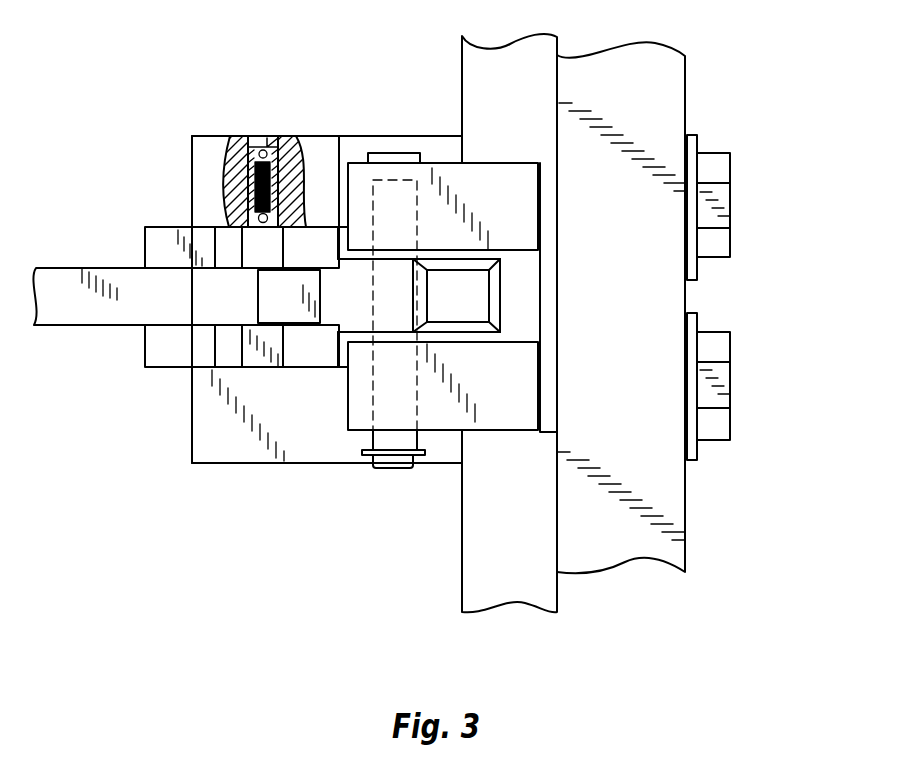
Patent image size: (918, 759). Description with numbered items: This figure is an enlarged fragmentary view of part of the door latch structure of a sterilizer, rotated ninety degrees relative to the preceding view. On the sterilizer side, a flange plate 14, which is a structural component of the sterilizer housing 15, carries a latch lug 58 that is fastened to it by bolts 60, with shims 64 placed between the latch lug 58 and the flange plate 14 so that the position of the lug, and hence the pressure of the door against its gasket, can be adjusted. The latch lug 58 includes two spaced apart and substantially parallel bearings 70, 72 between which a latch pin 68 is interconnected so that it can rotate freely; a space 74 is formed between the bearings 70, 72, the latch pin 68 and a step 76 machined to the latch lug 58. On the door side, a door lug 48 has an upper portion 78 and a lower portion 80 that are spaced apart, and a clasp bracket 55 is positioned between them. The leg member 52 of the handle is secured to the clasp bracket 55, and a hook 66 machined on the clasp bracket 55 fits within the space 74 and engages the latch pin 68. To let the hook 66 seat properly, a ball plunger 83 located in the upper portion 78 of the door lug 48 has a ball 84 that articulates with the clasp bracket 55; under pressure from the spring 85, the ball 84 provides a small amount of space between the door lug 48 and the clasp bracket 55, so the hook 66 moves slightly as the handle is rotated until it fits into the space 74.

The flange plate 14 is at (542, 588).
The sterilizer housing 15 is at (668, 80).
The door lug 48 is at (232, 445).
The leg member 52 is at (62, 282).
The clasp bracket 55 is at (163, 253).
The latch lug 58 is at (460, 423).
The bolts 60 is at (718, 176).
The shims 64 is at (547, 325).
The hook 66 is at (453, 287).
The latch pin 68 is at (390, 407).
The bearing 70 is at (447, 413).
The bearing 72 is at (482, 182).
The space 74 is at (467, 250).
The step 76 is at (523, 293).
The upper portion 78 is at (200, 173).
The lower portion 80 is at (205, 410).
The ball plunger 83 is at (255, 137).
The ball 84 is at (258, 218).
The spring 85 is at (253, 183).